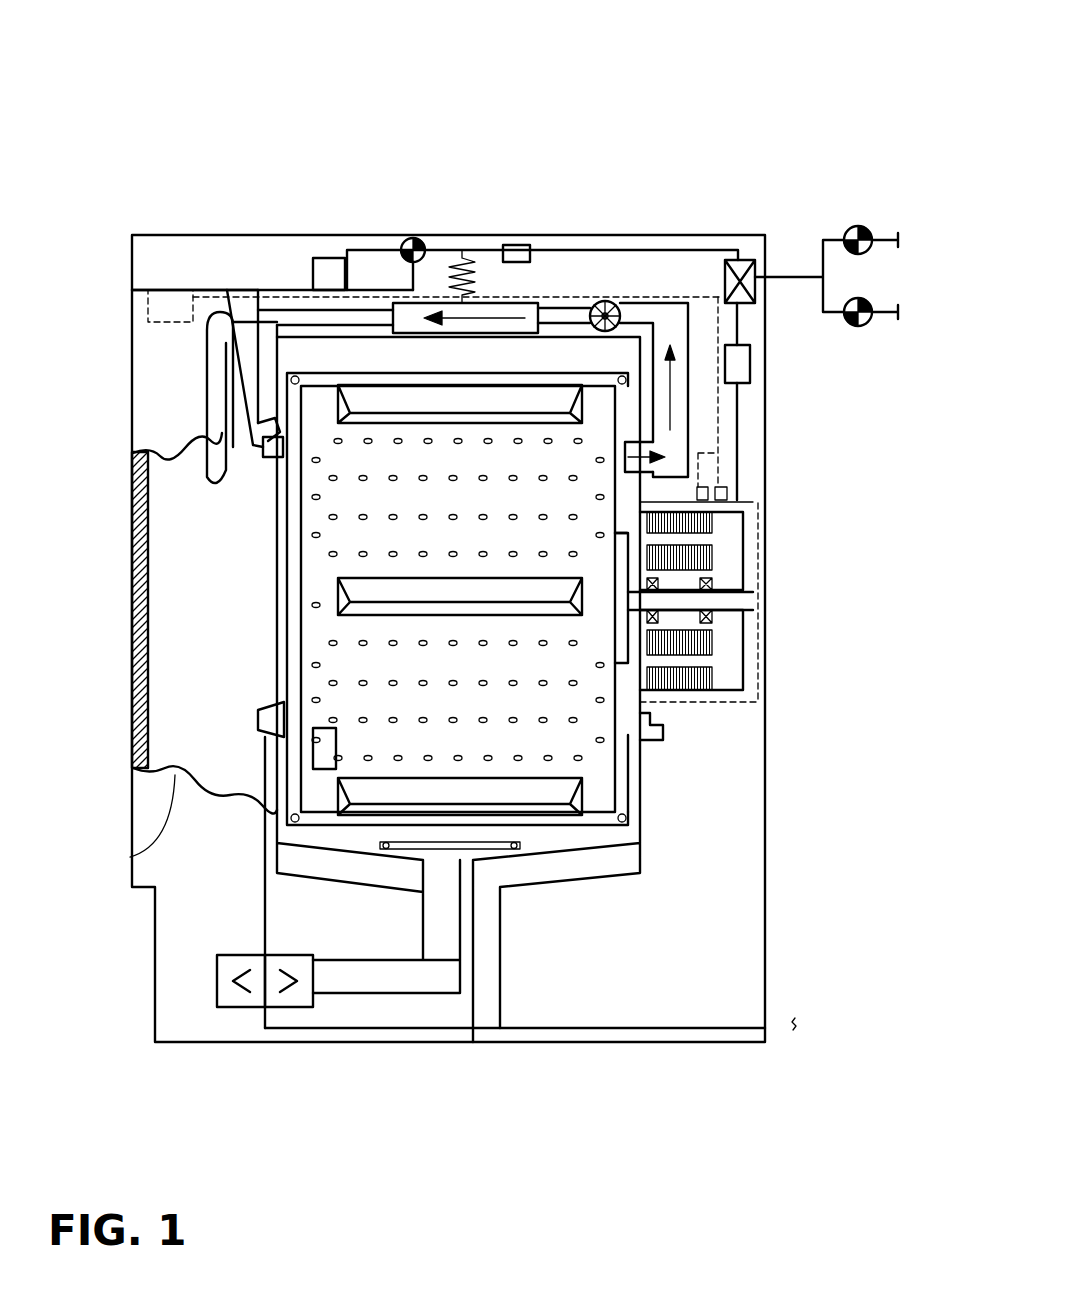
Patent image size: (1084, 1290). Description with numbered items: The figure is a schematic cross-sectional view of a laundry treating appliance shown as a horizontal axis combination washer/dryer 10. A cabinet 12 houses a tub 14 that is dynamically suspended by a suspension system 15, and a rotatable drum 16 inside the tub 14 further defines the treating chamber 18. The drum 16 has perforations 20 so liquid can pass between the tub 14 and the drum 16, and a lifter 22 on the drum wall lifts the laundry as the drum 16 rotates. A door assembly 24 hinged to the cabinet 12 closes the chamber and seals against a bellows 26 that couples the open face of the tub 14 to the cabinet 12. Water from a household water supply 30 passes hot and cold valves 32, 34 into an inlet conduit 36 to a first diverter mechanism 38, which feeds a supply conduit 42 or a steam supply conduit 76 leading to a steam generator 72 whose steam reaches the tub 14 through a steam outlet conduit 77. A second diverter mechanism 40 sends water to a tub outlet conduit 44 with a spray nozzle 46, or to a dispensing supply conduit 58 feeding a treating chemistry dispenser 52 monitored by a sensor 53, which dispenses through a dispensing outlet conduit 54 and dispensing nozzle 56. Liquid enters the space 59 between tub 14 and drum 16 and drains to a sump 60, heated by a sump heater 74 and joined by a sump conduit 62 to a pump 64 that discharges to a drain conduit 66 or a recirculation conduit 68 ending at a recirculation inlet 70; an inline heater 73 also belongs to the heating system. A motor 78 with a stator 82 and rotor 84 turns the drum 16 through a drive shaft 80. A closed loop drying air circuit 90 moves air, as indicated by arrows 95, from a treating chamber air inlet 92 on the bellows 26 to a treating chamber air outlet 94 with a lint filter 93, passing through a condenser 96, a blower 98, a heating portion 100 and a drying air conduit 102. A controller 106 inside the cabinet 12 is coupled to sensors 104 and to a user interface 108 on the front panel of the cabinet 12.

The combination washer/dryer 10 is at (162, 14).
The cabinet 12 is at (673, 233).
The tub 14 is at (498, 349).
The suspension system 15 is at (448, 278).
The drum 16 is at (262, 318).
The treating chamber 18 is at (435, 511).
The perforations 20 is at (577, 758).
The lifter 22 is at (565, 800).
The door assembly 24 is at (132, 640).
The bellows 26 is at (175, 775).
The household water supply 30 is at (887, 226).
The hot water valve 32 is at (862, 226).
The cold water valve 34 is at (862, 327).
The inlet conduit 36 is at (788, 275).
The first diverter mechanism 38 is at (743, 260).
The second diverter mechanism 40 is at (408, 238).
The supply conduit 42 is at (598, 250).
The tub outlet conduit 44 is at (282, 262).
The spray nozzle 46 is at (275, 420).
The treating chemistry dispenser 52 is at (275, 255).
The sensor 53 is at (330, 270).
The dispensing outlet conduit 54 is at (215, 333).
The dispensing nozzle 56 is at (222, 437).
The dispensing supply conduit 58 is at (375, 365).
The space 59 is at (430, 364).
The sump 60 is at (510, 870).
The sump conduit 62 is at (440, 965).
The pump 64 is at (241, 1010).
The drain conduit 66 is at (781, 1034).
The recirculation conduit 68 is at (265, 887).
The recirculation inlet 70 is at (258, 722).
The steam generator 72 is at (751, 366).
The inline heater 73 is at (514, 244).
The sump heater 74 is at (530, 850).
The steam supply conduit 76 is at (740, 312).
The steam outlet conduit 77 is at (665, 720).
The motor 78 is at (748, 495).
The drive shaft 80 is at (737, 613).
The stator 82 is at (720, 680).
The rotor 84 is at (700, 640).
The drying air circuit 90 is at (657, 296).
The treating chamber air inlet 92 is at (215, 450).
The filter 93 is at (628, 448).
The treating chamber air outlet 94 is at (633, 475).
The arrows 95 is at (253, 500).
The condenser 96 is at (700, 300).
The blower 98 is at (598, 302).
The heating portion 100 is at (463, 324).
The drying air conduit 102 is at (240, 300).
The sensors 104 is at (318, 728).
The controller 106 is at (186, 342).
The user interface 108 is at (130, 314).